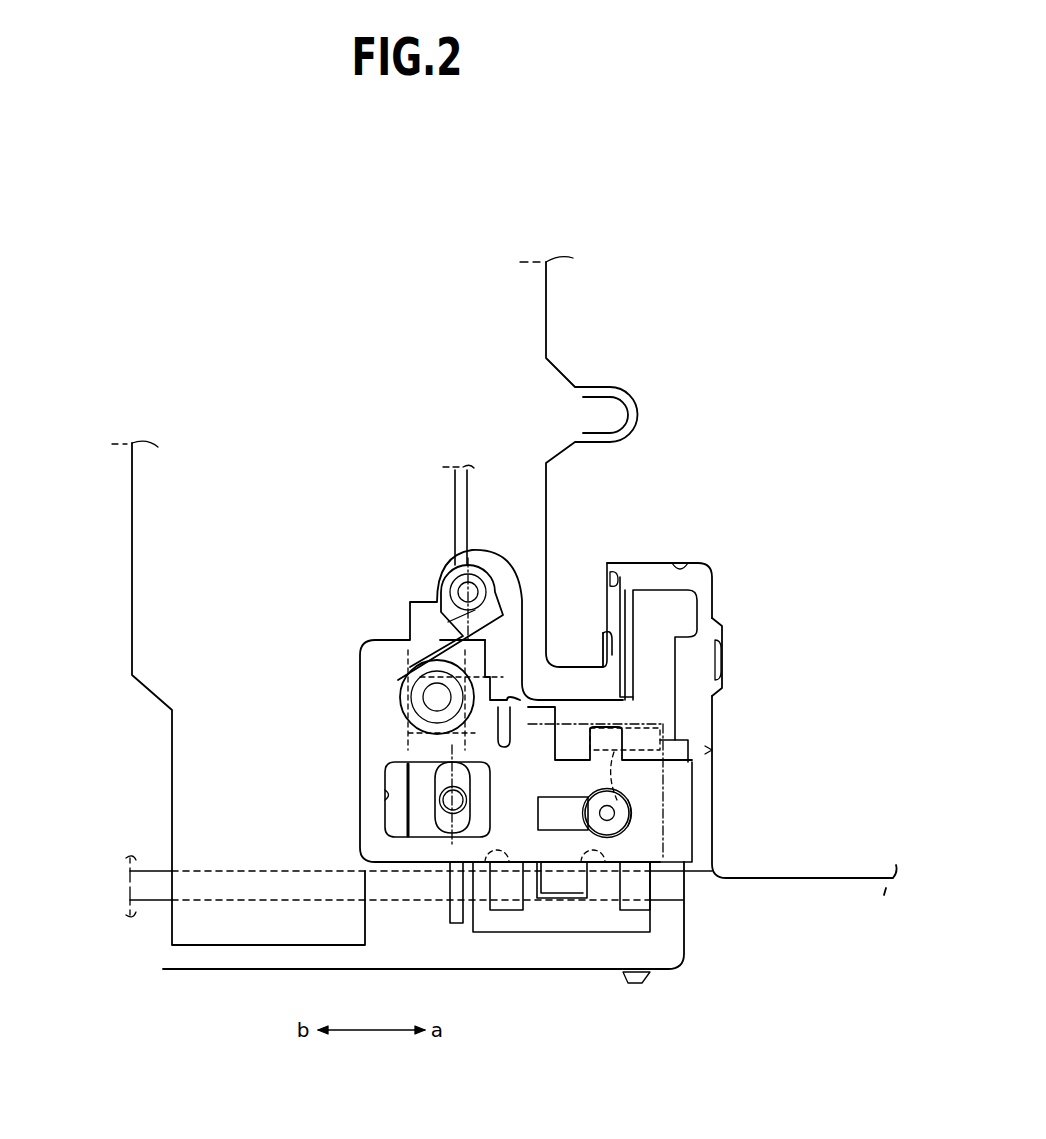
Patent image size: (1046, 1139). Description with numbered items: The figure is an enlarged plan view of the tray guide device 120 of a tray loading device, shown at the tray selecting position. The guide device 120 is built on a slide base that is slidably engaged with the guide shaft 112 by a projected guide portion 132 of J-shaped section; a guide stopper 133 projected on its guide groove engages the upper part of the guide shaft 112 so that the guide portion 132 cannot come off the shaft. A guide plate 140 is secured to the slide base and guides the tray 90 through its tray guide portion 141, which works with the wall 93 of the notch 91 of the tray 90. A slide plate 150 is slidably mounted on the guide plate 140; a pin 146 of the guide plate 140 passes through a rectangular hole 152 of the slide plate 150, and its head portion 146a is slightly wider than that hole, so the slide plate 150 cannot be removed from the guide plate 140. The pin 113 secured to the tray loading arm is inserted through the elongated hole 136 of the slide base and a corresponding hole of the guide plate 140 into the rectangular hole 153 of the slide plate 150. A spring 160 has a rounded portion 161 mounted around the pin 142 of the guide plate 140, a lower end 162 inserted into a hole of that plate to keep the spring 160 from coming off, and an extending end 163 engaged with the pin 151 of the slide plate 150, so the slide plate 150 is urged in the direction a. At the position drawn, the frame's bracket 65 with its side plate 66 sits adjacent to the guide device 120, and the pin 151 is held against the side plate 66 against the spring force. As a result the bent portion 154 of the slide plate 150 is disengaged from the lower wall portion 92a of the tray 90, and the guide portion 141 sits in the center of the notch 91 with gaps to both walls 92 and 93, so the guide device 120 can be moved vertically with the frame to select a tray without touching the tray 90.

The bracket 65 is at (152, 543).
The side plate 66 is at (452, 488).
The tray 90 is at (562, 328).
The notch 91 is at (695, 558).
The wall 92 is at (718, 588).
The lower wall portion 92a is at (705, 750).
The wall 93 is at (615, 578).
The guide shaft 112 is at (148, 871).
The pin 113 is at (448, 800).
The tray guide device 120 is at (740, 644).
The guide portion 132 is at (580, 923).
The guide stopper 133 is at (495, 882).
The elongated hole 136 is at (445, 823).
The guide plate 140 is at (672, 716).
The tray guide portion 141 is at (652, 598).
The pin 142 is at (462, 587).
The pin 146 is at (607, 800).
The head portion 146a is at (620, 820).
The slide plate 150 is at (377, 818).
The pin 151 is at (437, 697).
The rectangular hole 152 is at (563, 827).
The rectangular hole 153 is at (390, 778).
The bent portion 154 is at (695, 797).
The spring 160 is at (418, 583).
The rounded portion 161 is at (488, 562).
The lower end 162 is at (453, 630).
The extending end 163 is at (413, 713).